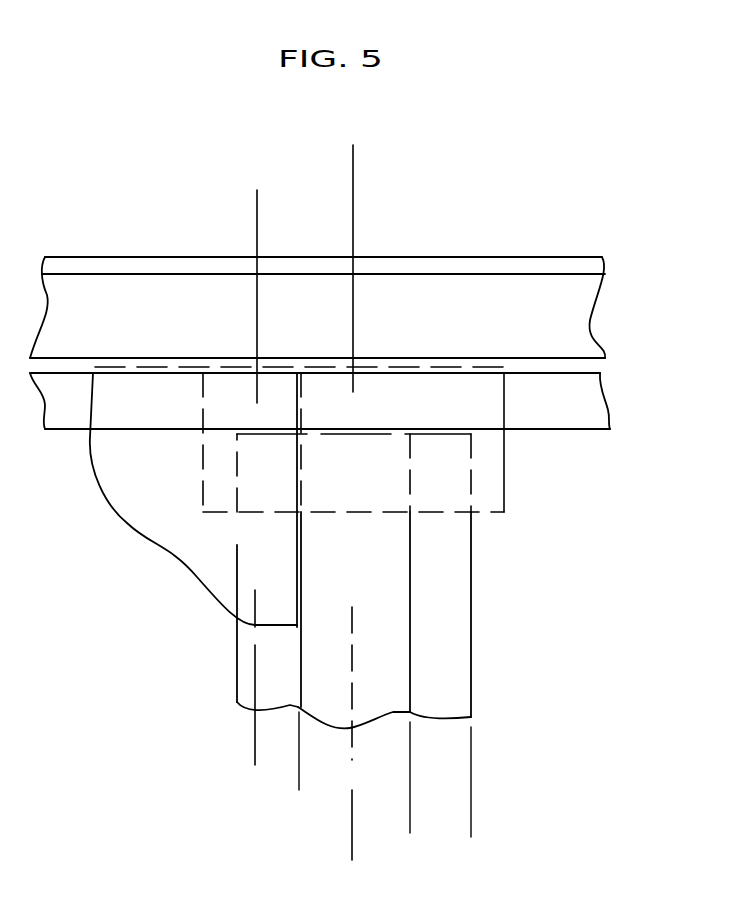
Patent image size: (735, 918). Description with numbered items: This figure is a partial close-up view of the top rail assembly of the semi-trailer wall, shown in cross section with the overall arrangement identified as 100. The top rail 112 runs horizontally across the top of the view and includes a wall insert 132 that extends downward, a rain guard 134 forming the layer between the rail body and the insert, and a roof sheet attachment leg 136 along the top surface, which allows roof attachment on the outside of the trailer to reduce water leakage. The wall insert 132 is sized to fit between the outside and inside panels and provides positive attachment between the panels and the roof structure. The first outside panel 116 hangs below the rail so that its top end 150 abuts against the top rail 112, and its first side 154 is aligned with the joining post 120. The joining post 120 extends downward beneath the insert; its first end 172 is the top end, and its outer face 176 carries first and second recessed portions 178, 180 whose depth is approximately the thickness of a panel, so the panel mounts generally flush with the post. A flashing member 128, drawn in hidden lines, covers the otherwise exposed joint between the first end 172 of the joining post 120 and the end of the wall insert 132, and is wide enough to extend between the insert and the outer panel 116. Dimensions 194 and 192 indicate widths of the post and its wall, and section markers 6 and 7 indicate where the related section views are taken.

The fastening assembly 100 is at (591, 148).
The top rail 112 is at (454, 237).
The roof sheet attachment leg 136 is at (582, 263).
The rain guard 134 is at (570, 368).
The wall insert 132 is at (587, 409).
The top end 150 is at (153, 373).
The flashing member 128 is at (483, 483).
The first outside panel 116 is at (127, 525).
The first side 154 is at (293, 558).
The first recessed portion 178 is at (242, 654).
The outer face 176 is at (378, 590).
The first end 172 is at (473, 545).
The second recessed portion 180 is at (443, 693).
The joining post 120 is at (491, 635).
The post width dimension 194 is at (430, 775).
The wall thickness dimension 192 is at (491, 809).
The section line 6- 6 is at (292, 152).
The section line 7- 7 is at (205, 196).